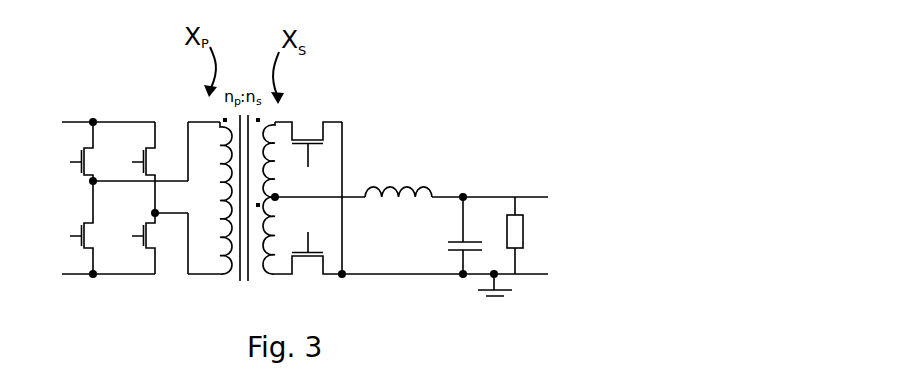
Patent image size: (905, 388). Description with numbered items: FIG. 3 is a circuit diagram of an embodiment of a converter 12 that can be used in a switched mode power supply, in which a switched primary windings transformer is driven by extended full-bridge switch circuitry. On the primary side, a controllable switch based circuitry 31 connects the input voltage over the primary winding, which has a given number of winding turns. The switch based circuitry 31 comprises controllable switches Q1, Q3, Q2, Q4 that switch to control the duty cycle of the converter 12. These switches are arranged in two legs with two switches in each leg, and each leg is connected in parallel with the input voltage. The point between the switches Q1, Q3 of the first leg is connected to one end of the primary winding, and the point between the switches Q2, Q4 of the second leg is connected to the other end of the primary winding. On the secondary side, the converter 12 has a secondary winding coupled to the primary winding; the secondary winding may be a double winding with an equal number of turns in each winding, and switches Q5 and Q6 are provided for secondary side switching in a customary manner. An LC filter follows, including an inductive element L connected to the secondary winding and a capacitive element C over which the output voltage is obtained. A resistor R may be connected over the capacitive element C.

The converter 12 is at (429, 200).
The controllable switch based circuitry 31 is at (111, 229).
The controllable switch Q1 is at (75, 151).
The controllable switch Q2 is at (136, 167).
The controllable switch Q3 is at (75, 227).
The controllable switch Q4 is at (133, 282).
The switch Q5 is at (308, 144).
The switch Q6 is at (308, 252).
The inductive element L is at (398, 184).
The capacitive element C is at (465, 235).
The resistor R is at (521, 235).